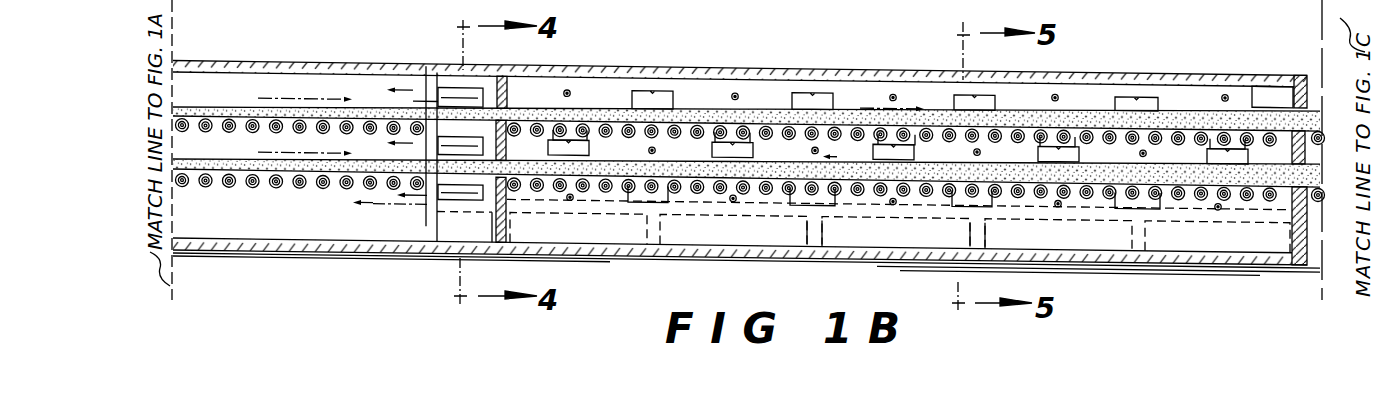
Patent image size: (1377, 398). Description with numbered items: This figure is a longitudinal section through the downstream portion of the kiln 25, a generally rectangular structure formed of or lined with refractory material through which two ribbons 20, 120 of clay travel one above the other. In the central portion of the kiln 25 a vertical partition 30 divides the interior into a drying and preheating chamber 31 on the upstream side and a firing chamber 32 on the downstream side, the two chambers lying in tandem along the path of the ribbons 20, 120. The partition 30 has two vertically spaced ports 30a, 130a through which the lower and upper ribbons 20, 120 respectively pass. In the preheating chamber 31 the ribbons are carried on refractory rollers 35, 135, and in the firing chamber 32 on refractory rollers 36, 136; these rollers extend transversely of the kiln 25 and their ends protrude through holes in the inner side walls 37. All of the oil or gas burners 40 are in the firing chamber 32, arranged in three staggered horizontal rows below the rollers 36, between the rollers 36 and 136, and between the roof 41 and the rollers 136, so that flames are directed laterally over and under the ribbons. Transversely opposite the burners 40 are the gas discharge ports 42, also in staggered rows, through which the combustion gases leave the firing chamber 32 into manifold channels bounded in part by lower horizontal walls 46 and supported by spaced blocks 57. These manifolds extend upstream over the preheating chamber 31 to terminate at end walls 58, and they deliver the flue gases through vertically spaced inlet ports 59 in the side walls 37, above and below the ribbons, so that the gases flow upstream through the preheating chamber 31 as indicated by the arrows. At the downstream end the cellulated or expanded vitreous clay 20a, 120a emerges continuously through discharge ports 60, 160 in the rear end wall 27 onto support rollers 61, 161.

The ribbon 20 is at (229, 158).
The cellulated or expanded vitreous clay 20a is at (1190, 160).
The kiln 25 is at (294, 59).
The rear end wall 27 is at (1302, 64).
The vertical partition 30 is at (509, 98).
The port 30a is at (480, 197).
The drying and preheating chamber 31 is at (358, 82).
The firing chamber 32 is at (1038, 78).
The rollers 35 is at (231, 186).
The rollers 36 is at (1005, 187).
The inner side walls 37 is at (327, 234).
The combustion nozzles or burners 40 is at (569, 85).
The roof 41 is at (796, 61).
The gas discharge ports 42 is at (655, 84).
The lower horizontal walls 46 is at (669, 210).
The spaced blocks 57 is at (823, 224).
The end walls 58 is at (425, 225).
The flue gas inlet ports 59 is at (447, 84).
The discharge port 60 is at (1291, 182).
The support rollers 61 is at (1331, 187).
The ribbon 120 is at (228, 106).
The cellulated or expanded vitreous clay 120a is at (1197, 99).
The port 130a is at (496, 102).
The rollers 135 is at (235, 132).
The rollers 136 is at (1040, 116).
The discharge port 160 is at (1291, 90).
The support rollers 161 is at (1292, 138).